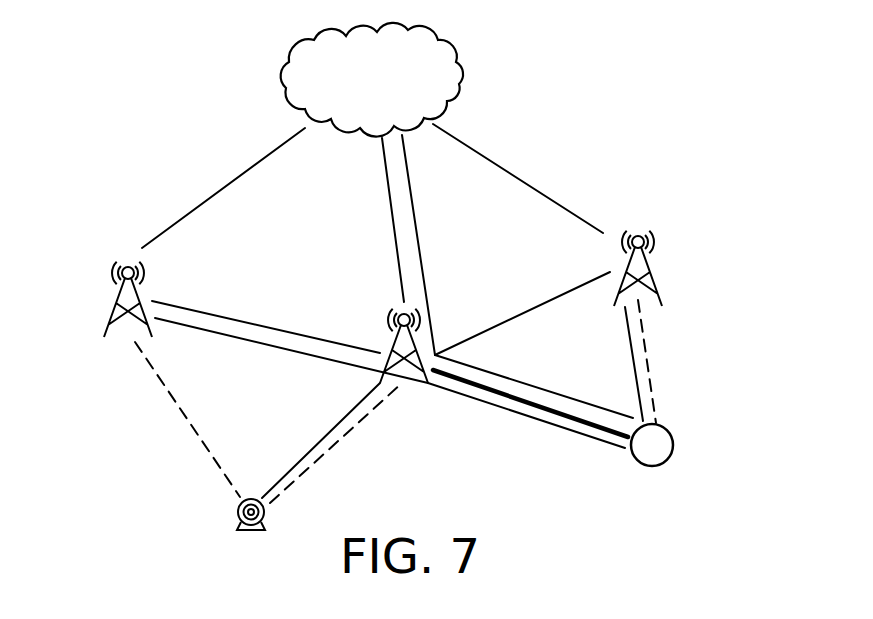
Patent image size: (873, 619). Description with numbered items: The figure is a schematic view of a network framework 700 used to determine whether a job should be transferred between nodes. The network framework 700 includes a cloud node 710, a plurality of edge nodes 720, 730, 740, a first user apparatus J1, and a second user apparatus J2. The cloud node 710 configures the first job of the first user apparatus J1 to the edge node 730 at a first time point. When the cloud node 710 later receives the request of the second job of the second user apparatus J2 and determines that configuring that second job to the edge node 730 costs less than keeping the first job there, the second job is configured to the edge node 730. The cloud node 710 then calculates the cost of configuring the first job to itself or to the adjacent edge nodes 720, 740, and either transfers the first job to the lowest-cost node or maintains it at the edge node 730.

The network framework 700 is at (668, 540).
The cloud node 710 is at (462, 73).
The edge node 720 is at (125, 253).
The edge node 730 is at (393, 300).
The edge node 740 is at (660, 267).
The first user apparatus J1 is at (667, 461).
The second user apparatus J2 is at (240, 523).